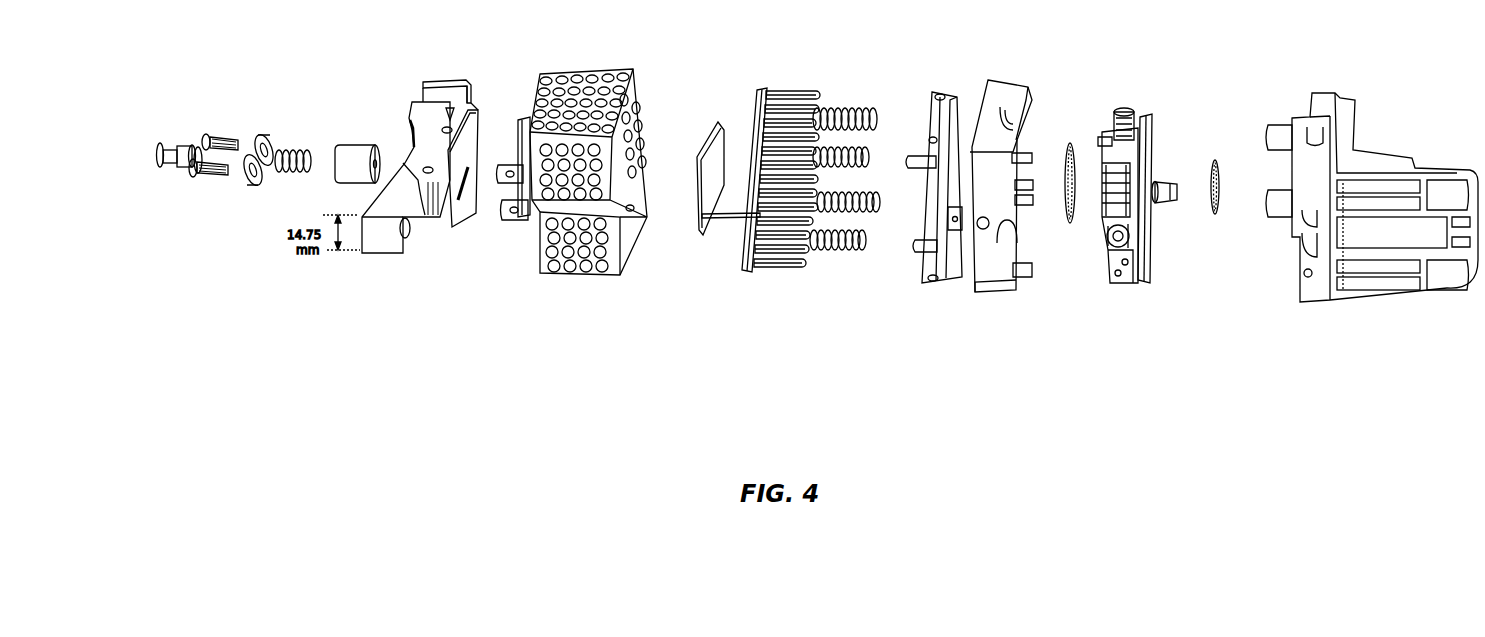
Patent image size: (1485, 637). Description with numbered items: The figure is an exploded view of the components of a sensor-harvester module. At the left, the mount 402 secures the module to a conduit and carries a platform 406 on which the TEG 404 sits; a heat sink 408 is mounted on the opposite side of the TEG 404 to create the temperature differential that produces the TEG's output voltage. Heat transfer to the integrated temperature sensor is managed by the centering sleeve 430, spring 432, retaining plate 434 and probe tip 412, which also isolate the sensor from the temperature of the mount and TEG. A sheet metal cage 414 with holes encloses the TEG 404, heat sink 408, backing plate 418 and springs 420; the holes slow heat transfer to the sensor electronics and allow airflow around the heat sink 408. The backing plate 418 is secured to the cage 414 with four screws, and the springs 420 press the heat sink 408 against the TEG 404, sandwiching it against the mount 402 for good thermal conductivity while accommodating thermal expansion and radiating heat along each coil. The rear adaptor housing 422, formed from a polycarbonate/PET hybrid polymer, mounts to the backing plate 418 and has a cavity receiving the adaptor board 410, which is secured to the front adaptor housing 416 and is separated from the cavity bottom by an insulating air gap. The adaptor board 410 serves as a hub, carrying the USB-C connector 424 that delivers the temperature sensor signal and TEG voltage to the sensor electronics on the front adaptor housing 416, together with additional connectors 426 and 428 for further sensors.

The mount 402 is at (421, 211).
The TEG 404 is at (696, 204).
The platform 406 is at (502, 207).
The heat sink 408 is at (805, 157).
The adaptor board 410 is at (1166, 240).
The probe tip 412 is at (168, 180).
The sheet metal cage 414 is at (562, 158).
The front adaptor housing 416 is at (1372, 197).
The backing plate 418 is at (969, 162).
The springs 420 is at (815, 212).
The rear adaptor housing 422 is at (1055, 172).
The USB-C connector 424 is at (1212, 254).
The additional connector 426 is at (1172, 102).
The additional connector 428 is at (1096, 301).
The centering sleeve 430 is at (367, 143).
The spring 432 is at (314, 117).
The retaining plate 434 is at (214, 193).